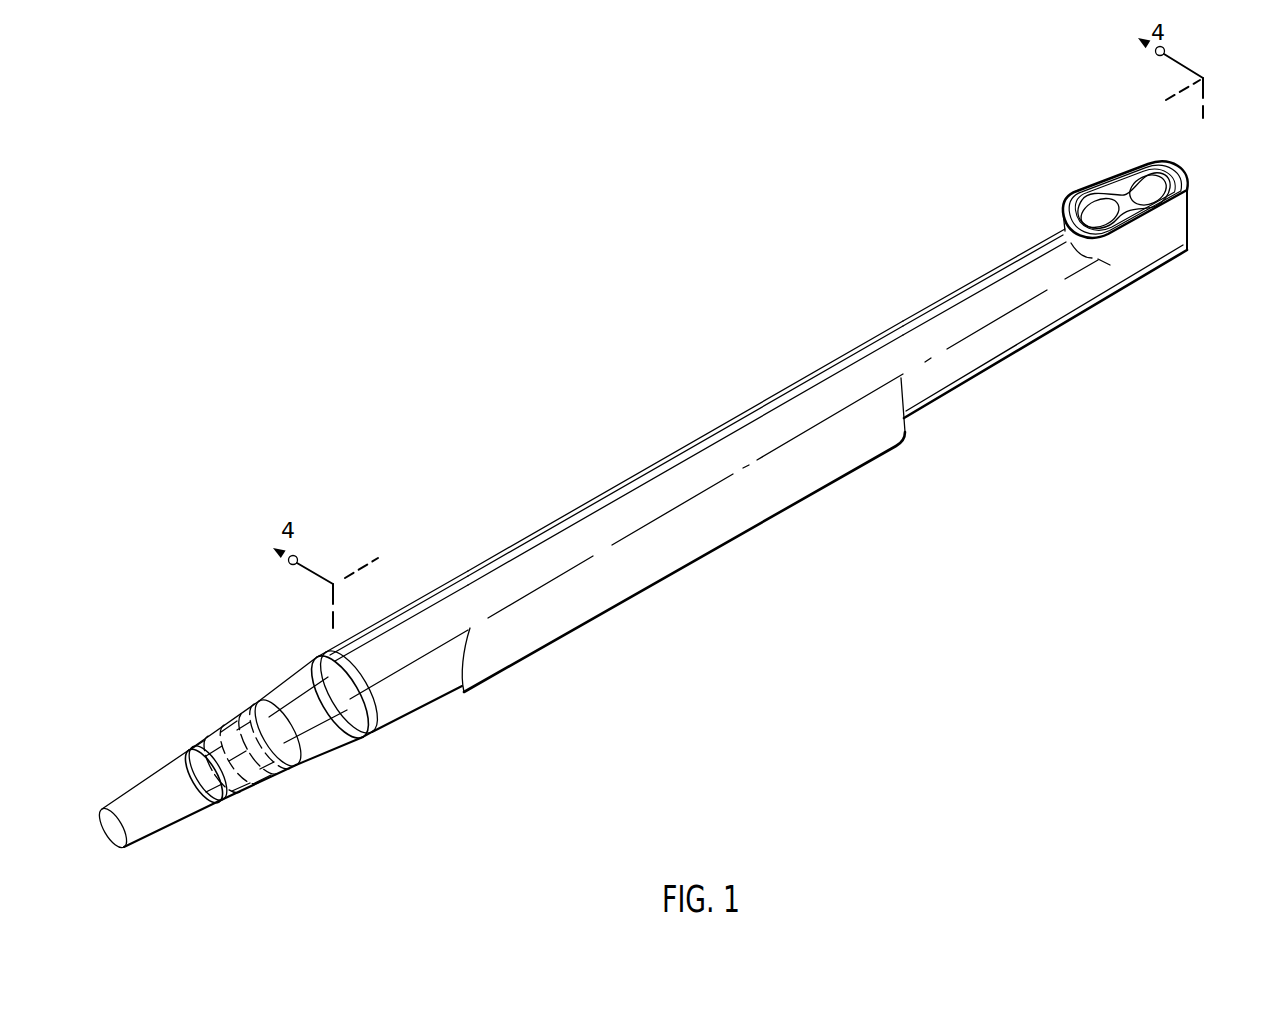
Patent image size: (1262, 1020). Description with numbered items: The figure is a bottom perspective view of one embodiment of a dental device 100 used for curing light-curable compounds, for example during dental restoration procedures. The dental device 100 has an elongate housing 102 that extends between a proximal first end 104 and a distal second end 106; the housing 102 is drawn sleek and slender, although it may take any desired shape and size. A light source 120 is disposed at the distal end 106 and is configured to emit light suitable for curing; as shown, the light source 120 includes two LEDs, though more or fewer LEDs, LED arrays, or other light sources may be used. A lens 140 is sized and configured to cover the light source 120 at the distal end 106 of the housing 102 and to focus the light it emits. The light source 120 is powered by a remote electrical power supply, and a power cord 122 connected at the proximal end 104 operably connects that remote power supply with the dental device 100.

The dental device 100 is at (571, 464).
The elongate housing 102 is at (945, 363).
The proximal first end 104 is at (272, 657).
The distal second end 106 is at (1033, 219).
The light source 120 is at (1125, 227).
The power cord 122 is at (170, 803).
The lens 140 is at (1120, 187).